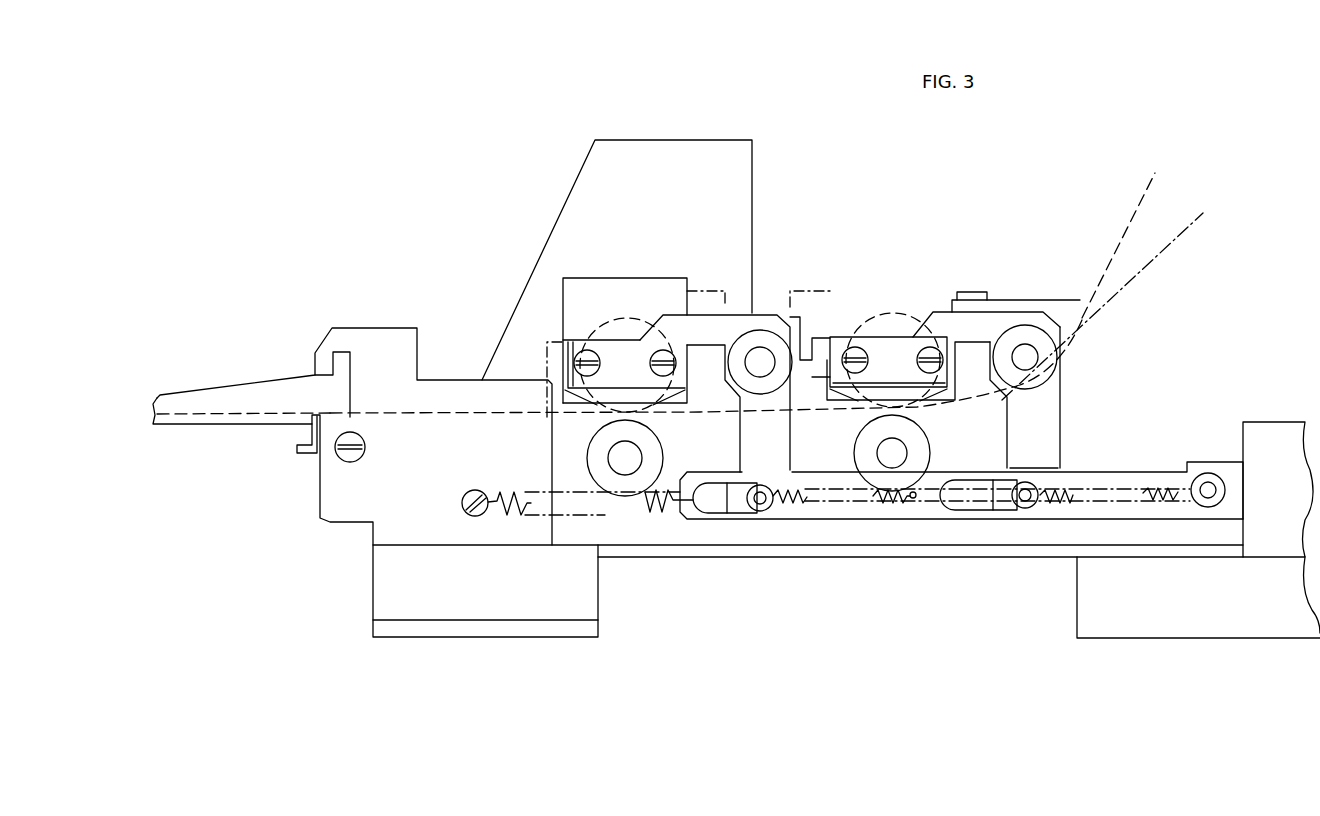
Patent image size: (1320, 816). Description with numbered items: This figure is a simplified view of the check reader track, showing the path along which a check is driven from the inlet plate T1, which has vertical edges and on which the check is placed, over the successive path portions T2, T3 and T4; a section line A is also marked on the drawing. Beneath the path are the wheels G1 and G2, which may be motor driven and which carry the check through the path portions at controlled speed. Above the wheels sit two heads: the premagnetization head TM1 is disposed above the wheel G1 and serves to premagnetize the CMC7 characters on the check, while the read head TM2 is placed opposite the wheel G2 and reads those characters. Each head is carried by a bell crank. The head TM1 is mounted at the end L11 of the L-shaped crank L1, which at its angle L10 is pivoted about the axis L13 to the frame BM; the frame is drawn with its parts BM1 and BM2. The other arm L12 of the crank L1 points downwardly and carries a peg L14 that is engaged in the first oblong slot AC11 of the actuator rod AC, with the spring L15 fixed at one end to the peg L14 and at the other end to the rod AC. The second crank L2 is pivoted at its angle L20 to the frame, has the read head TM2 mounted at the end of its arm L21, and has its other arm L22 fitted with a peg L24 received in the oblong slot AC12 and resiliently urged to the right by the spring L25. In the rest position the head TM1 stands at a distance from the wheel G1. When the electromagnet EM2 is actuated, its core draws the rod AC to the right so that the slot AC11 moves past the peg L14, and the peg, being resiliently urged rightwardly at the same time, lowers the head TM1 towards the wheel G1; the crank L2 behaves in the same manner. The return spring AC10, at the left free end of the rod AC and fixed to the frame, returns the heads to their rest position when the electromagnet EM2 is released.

The section line A is at (263, 297).
The frame BM is at (677, 157).
The base member BM1 is at (332, 507).
The base member BM2 is at (960, 300).
The inlet plate T1 is at (210, 407).
The path portion T2 is at (432, 405).
The path portion T3 is at (705, 405).
The path portion T4 is at (1130, 278).
The premagnetization head TM1 is at (619, 410).
The read head TM2 is at (883, 413).
The crank L1 is at (767, 304).
The second crank L2 is at (1009, 312).
The angle of crank L10 is at (773, 323).
The end of crank L11 is at (597, 400).
The other arm of crank L12 is at (745, 517).
The axis L13 is at (760, 360).
The peg L14 is at (765, 517).
The spring L15 is at (800, 503).
The angle of second crank L20 is at (1038, 312).
The arm of second crank L21 is at (837, 343).
The other arm of second crank L22 is at (1010, 513).
The peg L24 is at (995, 478).
The spring L25 is at (1053, 503).
The wheel G1 is at (622, 483).
The wheel G2 is at (865, 458).
The actuator rod AC is at (1135, 468).
The return spring AC10 is at (528, 463).
The first oblong slot AC11 is at (708, 515).
The oblong slot AC12 is at (950, 512).
The electromagnet EM2 is at (1262, 440).